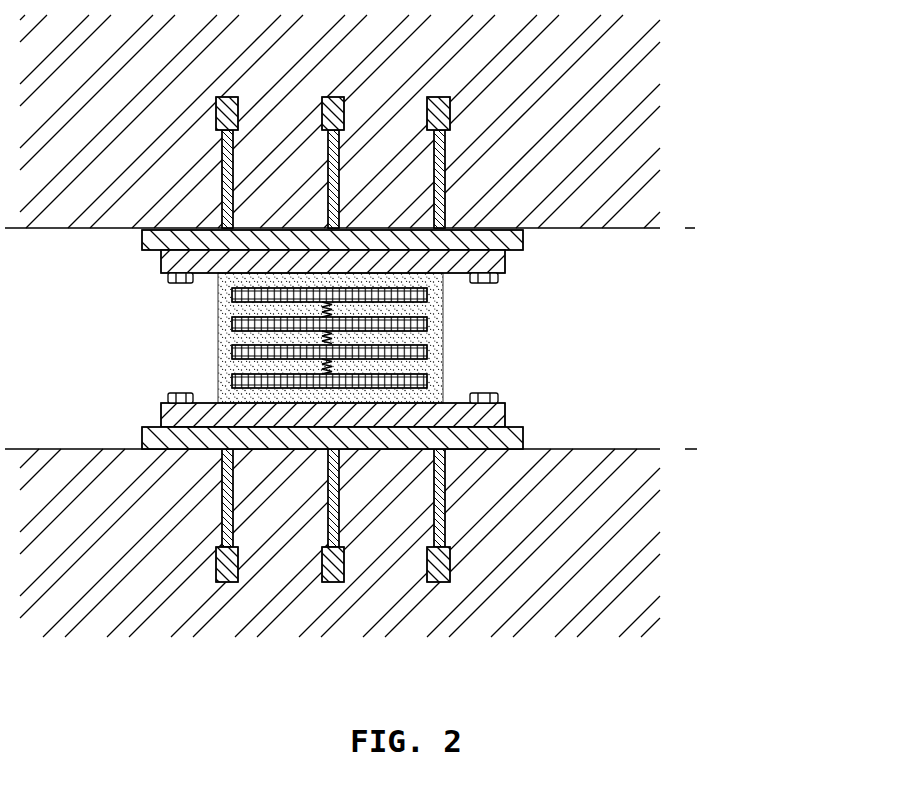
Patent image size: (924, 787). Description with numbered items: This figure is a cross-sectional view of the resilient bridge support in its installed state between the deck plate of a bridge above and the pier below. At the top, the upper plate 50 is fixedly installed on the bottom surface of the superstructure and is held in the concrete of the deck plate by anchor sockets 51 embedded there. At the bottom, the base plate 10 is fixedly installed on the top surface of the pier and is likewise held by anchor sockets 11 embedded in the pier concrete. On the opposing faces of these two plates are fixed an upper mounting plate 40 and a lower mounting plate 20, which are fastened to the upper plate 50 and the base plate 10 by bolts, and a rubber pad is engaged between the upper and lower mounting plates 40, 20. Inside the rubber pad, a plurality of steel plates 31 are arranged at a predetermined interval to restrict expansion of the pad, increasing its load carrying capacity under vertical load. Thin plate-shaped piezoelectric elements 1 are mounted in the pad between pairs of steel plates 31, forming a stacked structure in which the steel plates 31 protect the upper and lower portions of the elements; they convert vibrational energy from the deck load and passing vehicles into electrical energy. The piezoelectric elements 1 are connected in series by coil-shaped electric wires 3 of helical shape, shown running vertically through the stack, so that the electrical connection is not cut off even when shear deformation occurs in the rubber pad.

The piezoelectric element 1 is at (430, 348).
The coil-shaped electric wire 3 is at (327, 310).
The steel plate 31 is at (218, 364).
The base plate 10 is at (510, 438).
The anchor socket 11 is at (440, 518).
The lower mounting plate 20 is at (175, 417).
The upper mounting plate 40 is at (505, 263).
The upper plate 50 is at (517, 237).
The anchor socket 51 is at (444, 157).